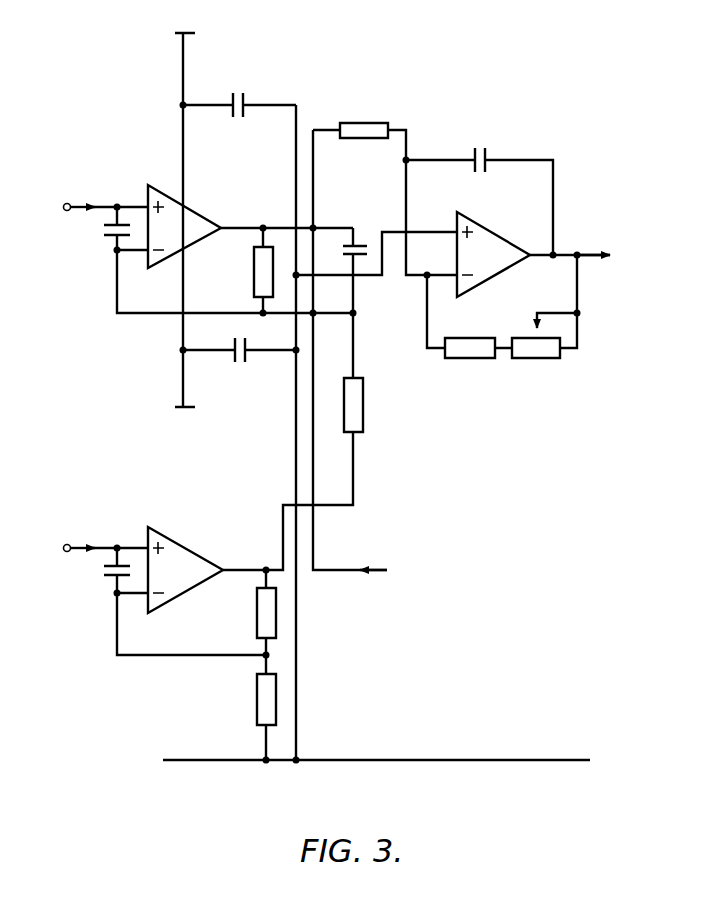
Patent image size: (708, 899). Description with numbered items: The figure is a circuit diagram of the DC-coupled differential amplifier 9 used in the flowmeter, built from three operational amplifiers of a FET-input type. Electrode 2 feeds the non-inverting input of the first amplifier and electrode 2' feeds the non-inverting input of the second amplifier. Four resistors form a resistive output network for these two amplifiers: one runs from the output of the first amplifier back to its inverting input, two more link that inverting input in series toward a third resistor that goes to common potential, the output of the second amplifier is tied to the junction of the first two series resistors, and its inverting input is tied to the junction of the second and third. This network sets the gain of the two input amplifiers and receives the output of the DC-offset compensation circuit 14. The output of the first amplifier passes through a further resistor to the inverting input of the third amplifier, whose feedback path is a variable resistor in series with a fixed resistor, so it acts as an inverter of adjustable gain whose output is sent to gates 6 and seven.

The DC-coupled differential amplifier 9 is at (510, 60).
The electrode 2 is at (88, 177).
The electrode 2' is at (89, 516).
The DC-offset compensation circuit 14 is at (494, 578).
The gate 6 is at (596, 282).